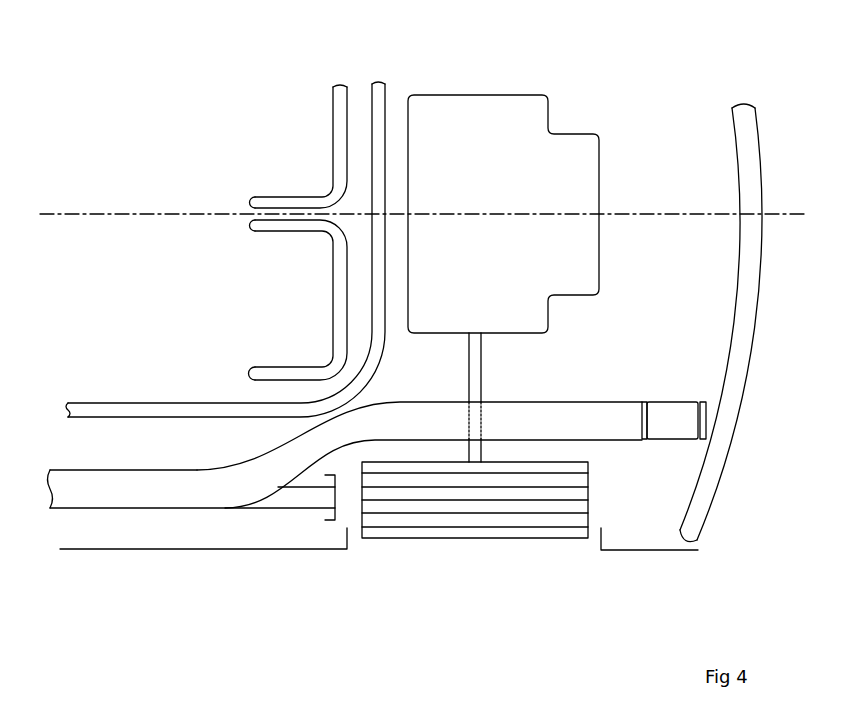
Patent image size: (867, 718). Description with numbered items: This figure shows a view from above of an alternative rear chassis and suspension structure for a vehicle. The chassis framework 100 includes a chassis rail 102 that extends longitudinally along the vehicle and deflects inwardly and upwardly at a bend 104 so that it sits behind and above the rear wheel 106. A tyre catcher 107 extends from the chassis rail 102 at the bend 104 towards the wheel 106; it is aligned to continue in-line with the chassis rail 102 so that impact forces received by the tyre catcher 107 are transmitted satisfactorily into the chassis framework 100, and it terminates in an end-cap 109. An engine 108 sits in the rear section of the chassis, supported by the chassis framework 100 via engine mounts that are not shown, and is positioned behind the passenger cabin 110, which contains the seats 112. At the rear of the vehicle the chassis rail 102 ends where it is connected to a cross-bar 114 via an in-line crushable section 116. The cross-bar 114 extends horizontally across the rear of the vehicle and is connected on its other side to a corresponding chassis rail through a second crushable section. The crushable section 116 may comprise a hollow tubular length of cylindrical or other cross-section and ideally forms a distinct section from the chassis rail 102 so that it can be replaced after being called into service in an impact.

The chassis framework 100 is at (150, 466).
The chassis rail 102 is at (190, 508).
The bend 104 is at (223, 487).
The rear wheel 106 is at (530, 538).
The tyre catcher 107 is at (292, 502).
The engine 108 is at (562, 132).
The end-cap 109 is at (338, 497).
The passenger cabin 110 is at (385, 115).
The seats 112 is at (312, 197).
The cross-bar 114 is at (737, 425).
The crushable section 116 is at (670, 400).